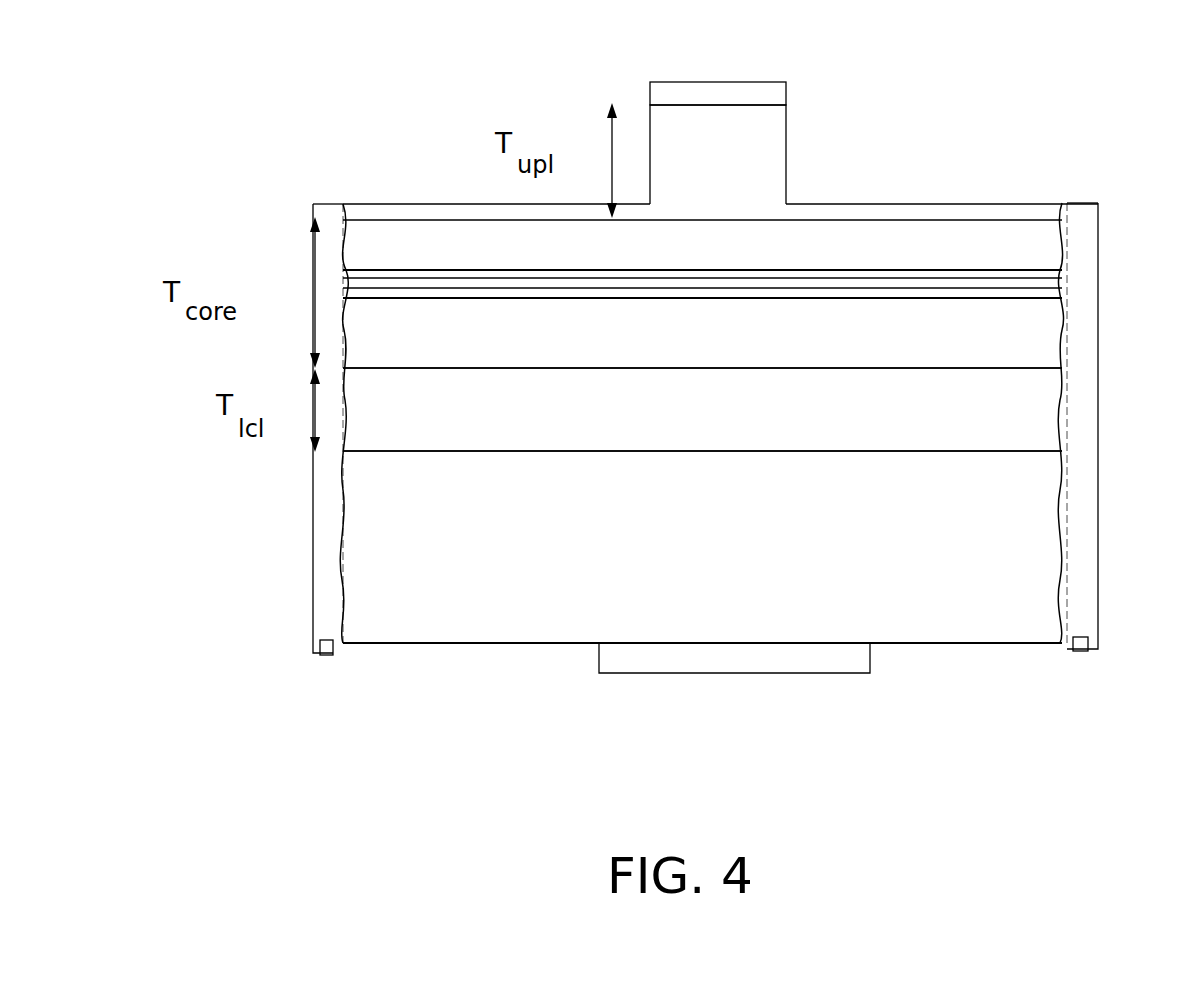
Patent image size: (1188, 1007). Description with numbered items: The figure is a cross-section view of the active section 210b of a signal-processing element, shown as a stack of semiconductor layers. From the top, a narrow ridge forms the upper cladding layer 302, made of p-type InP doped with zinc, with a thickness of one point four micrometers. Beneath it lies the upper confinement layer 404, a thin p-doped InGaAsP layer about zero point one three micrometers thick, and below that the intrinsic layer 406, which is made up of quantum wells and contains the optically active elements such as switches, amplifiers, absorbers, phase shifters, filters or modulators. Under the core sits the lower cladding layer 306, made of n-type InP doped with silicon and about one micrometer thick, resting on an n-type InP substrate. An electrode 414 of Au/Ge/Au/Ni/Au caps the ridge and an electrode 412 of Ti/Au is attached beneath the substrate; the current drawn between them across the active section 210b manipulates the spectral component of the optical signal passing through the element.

The active section 210b is at (224, 727).
The upper cladding layer 302 is at (734, 173).
The lower cladding layer 306 is at (734, 426).
The upper confinement layer 404 is at (734, 256).
The intrinsic layer 406 is at (734, 351).
The electrode 412 is at (733, 675).
The electrode 414 is at (719, 82).